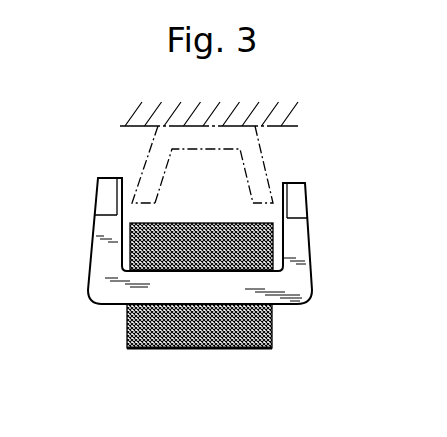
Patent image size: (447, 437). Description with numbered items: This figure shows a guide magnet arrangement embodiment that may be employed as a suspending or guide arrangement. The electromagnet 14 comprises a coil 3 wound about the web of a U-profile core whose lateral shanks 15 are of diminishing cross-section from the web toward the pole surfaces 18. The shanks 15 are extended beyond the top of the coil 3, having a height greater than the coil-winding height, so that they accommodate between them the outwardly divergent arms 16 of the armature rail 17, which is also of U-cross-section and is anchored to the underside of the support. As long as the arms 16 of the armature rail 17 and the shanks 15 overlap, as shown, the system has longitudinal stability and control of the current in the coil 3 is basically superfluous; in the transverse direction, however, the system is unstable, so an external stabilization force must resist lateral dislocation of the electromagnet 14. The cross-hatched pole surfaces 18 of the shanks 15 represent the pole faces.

The coil 3 is at (177, 350).
The electromagnet 14 is at (315, 309).
The lateral shanks 15 is at (97, 252).
The outwardly divergent arms 16 is at (159, 165).
The armature rail 17 is at (268, 145).
The pole surfaces 18 is at (124, 192).